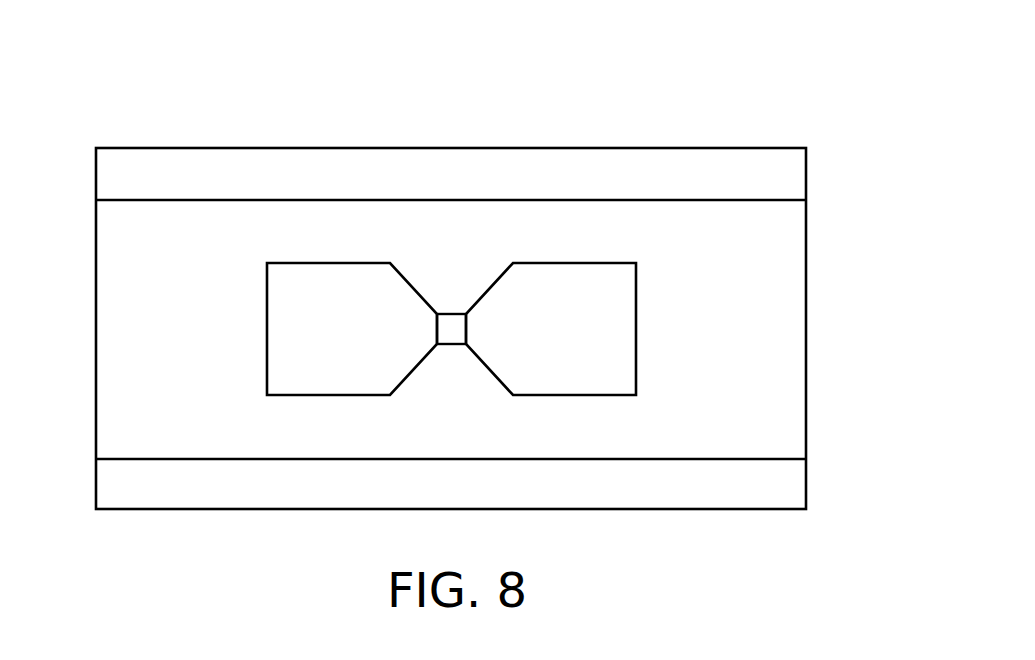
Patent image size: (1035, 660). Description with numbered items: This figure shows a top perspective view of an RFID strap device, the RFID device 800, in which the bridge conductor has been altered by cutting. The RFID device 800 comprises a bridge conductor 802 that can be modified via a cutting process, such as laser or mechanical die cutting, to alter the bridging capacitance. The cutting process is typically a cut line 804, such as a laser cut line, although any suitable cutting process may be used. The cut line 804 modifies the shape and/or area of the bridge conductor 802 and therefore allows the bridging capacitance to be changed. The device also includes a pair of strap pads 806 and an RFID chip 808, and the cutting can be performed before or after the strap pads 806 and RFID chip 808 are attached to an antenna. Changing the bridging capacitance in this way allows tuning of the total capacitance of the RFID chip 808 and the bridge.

The RFID device 800 is at (636, 86).
The bridge conductor 802 is at (768, 186).
The cut line 804 is at (780, 459).
The strap pads 806 is at (281, 333).
The RFID chip 808 is at (451, 314).